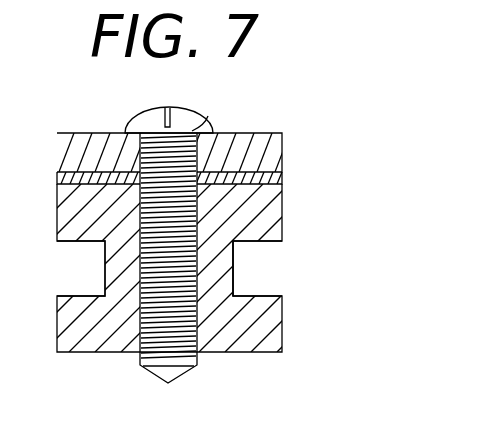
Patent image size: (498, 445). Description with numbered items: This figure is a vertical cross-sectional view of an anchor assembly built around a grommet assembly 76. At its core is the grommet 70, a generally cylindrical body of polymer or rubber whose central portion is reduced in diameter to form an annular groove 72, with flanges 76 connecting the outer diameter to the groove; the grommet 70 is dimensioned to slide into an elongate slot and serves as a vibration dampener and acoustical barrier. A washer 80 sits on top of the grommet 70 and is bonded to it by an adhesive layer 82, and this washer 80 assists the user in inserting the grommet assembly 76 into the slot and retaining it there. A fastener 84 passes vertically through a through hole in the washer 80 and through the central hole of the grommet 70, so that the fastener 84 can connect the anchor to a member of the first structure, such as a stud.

The grommet 70 is at (268, 211).
The annular groove 72 is at (253, 272).
The grommet assembly 76 is at (76, 120).
The washer 80 is at (255, 147).
The adhesive layer 82 is at (72, 178).
The fastener 84 is at (163, 297).